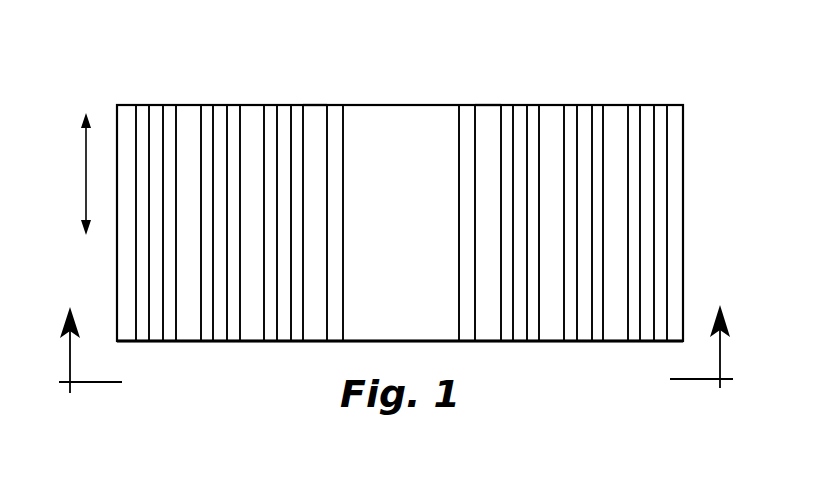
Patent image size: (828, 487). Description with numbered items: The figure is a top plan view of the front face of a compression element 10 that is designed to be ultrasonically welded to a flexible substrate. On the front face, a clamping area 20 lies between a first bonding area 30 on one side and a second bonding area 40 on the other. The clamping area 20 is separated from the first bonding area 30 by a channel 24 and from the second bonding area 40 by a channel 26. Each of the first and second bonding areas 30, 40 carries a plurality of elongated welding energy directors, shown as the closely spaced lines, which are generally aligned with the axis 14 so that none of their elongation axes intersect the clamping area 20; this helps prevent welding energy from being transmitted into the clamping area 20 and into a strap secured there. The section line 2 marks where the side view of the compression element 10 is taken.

The compression element 10 is at (645, 51).
The axis 14 is at (86, 158).
The clamping area 20 is at (322, 98).
The channel 24 is at (314, 92).
The channel 26 is at (486, 92).
The first bonding area 30 is at (115, 98).
The second bonding area 40 is at (685, 98).
The section line 2- 2 is at (396, 332).